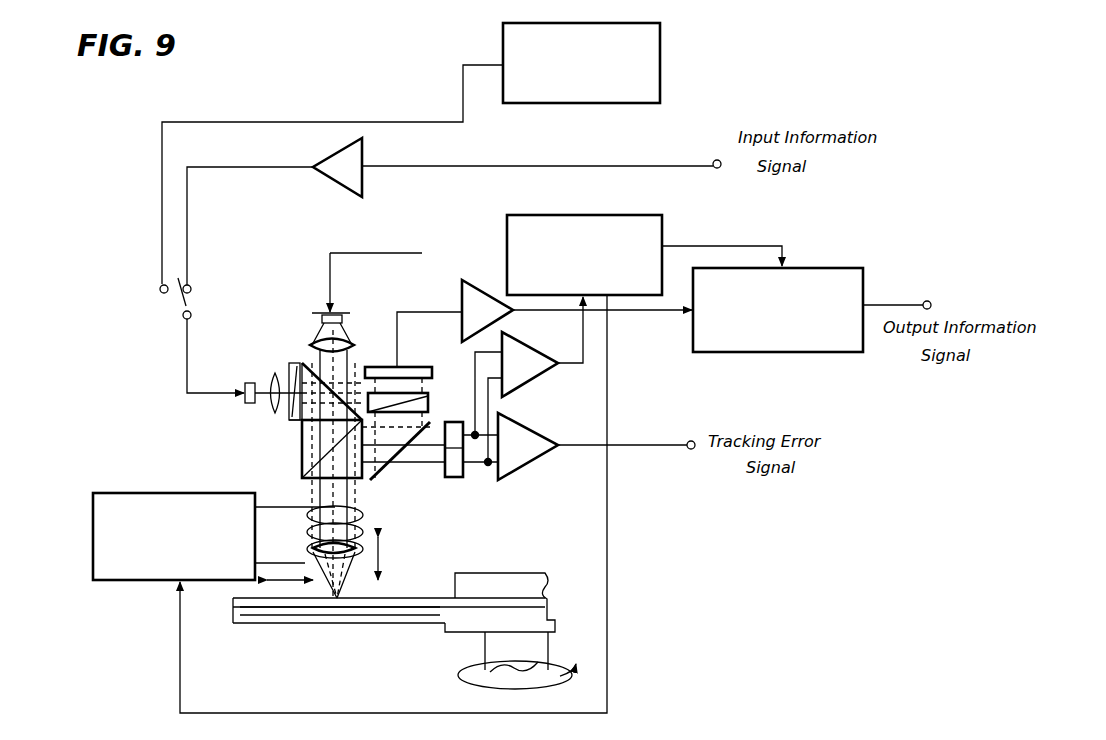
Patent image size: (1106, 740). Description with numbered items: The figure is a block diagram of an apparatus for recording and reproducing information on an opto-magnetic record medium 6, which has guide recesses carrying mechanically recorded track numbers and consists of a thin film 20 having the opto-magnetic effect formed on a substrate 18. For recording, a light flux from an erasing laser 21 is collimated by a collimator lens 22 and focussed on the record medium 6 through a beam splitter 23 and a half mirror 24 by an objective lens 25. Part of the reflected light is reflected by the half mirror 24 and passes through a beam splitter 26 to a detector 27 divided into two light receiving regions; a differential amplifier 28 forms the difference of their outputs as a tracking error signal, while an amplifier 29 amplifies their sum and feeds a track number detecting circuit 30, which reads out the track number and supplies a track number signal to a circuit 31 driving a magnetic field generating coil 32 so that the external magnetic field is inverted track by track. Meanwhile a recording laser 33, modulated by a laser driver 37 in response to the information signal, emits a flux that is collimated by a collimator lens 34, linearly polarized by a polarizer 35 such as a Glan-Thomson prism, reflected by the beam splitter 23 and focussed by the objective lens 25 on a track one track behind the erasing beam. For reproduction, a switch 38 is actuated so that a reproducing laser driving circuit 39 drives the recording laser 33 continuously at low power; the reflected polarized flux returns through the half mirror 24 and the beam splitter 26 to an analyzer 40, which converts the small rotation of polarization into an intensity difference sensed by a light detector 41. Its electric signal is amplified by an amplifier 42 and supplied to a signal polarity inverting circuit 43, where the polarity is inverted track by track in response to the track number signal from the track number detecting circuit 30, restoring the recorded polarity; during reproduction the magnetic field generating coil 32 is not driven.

The record medium 6 is at (362, 624).
The substrate 18 is at (315, 612).
The thin film 20 is at (272, 602).
The erasing laser 21 is at (320, 316).
The collimator lens 22 is at (310, 347).
The beam splitter 23 is at (338, 400).
The half mirror 24 is at (322, 446).
The objective lens 25 is at (344, 562).
The beam splitter 26 is at (392, 470).
The detector 27 is at (456, 478).
The differential amplifier 28 is at (528, 462).
The amplifier 29 is at (532, 382).
The track number detecting circuit 30 is at (618, 215).
The circuit for driving magnetic field generating coil 31 is at (93, 556).
The magnetic field generating coil 32 is at (360, 540).
The recording laser 33 is at (247, 404).
The collimator lens 34 is at (275, 415).
The polarizer 35 is at (294, 422).
The laser driver 37 is at (358, 180).
The switch 38 is at (176, 300).
The reproducing laser driving circuit 39 is at (662, 66).
The analyzer 40 is at (428, 404).
The light detector 41 is at (420, 342).
The amplifier 42 is at (503, 316).
The signal polarity inverting circuit 43 is at (822, 268).